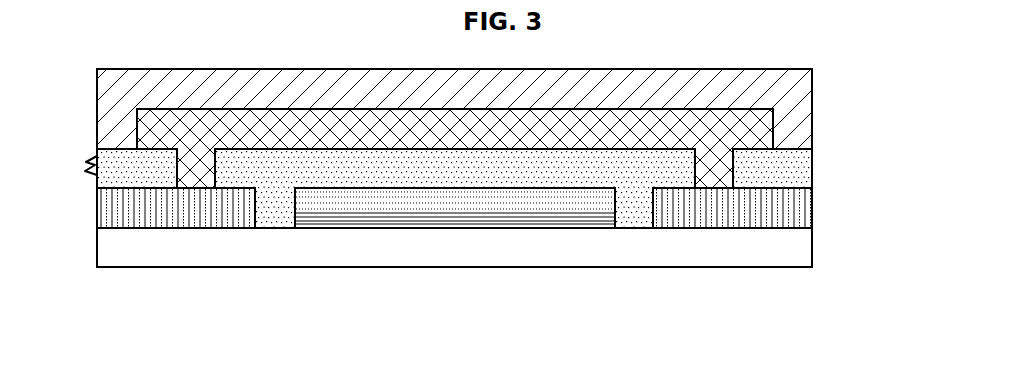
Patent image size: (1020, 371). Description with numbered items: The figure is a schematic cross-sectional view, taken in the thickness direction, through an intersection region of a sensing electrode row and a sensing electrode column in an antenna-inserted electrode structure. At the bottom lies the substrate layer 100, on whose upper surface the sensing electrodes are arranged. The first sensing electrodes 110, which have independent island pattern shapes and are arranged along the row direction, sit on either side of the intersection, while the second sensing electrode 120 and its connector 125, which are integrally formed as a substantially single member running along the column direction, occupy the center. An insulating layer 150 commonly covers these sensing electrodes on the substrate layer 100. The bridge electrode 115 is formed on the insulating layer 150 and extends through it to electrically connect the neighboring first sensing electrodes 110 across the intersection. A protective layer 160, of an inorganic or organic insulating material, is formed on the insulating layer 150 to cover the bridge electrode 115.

The substrate layer 100 is at (803, 252).
The first sensing electrodes 110 is at (805, 203).
The bridge electrode 115 is at (806, 122).
The second sensing electrodes 120 is at (458, 208).
The connector 125 is at (455, 265).
The insulating layer 150 is at (812, 160).
The protective layer 160 is at (810, 83).